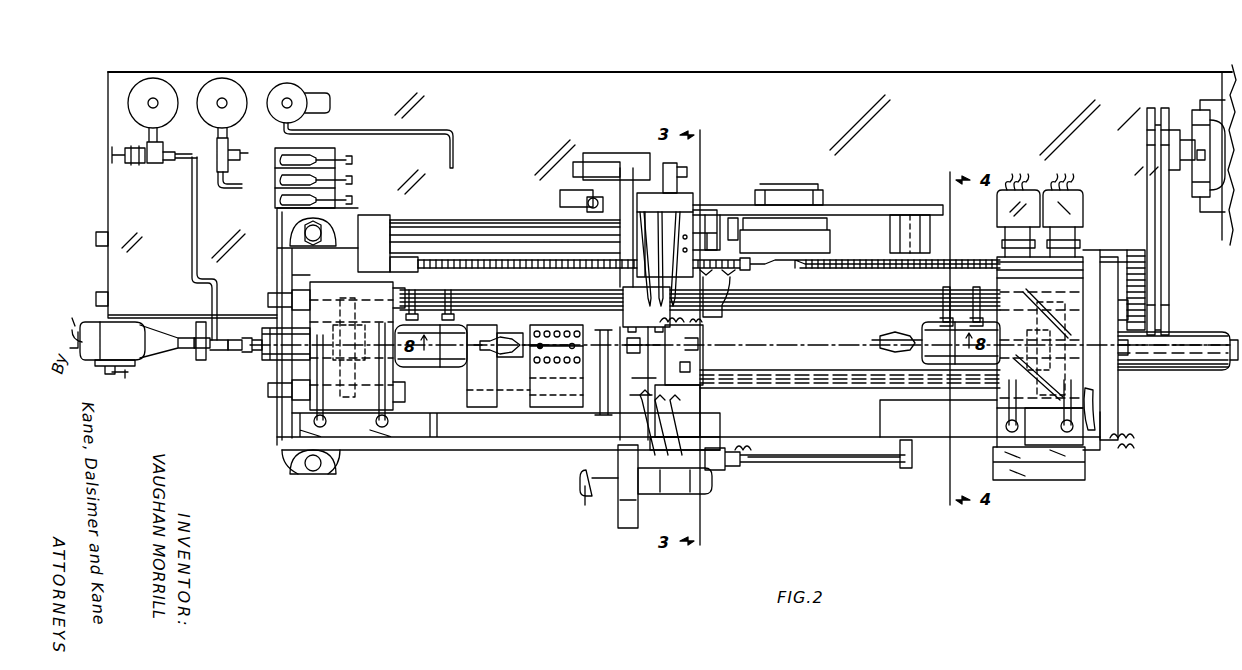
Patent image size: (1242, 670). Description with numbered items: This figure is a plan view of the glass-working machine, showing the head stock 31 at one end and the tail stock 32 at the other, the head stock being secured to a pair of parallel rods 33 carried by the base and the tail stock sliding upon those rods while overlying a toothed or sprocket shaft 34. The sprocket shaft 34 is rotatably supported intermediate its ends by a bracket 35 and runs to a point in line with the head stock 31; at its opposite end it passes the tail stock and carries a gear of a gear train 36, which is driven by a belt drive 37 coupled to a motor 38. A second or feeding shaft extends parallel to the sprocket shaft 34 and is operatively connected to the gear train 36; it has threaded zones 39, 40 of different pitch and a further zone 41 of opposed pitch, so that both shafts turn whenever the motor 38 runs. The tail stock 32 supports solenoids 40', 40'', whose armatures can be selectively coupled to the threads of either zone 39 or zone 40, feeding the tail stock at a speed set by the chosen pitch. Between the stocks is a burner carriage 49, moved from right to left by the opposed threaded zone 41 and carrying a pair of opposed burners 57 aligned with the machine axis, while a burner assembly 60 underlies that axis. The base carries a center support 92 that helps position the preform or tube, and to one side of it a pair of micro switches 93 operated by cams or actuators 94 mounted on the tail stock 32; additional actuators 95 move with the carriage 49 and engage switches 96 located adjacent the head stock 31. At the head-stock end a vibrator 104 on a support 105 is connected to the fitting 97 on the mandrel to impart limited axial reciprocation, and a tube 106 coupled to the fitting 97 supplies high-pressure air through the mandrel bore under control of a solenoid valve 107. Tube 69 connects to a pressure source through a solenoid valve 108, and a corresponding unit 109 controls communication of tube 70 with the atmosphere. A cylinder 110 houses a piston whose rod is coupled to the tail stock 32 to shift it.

The head stock 31 is at (365, 412).
The tail stock 32 is at (1078, 374).
The parallel rods 33 is at (805, 385).
The sprocket shaft 34 is at (848, 312).
The bracket 35 is at (725, 305).
The gear train 36 is at (1140, 300).
The belt drive 37 is at (1158, 200).
The motor 38 is at (1225, 72).
The threaded zone 39 is at (975, 262).
The threaded zone 40 is at (846, 219).
The solenoid 40' is at (1011, 189).
The solenoid 40'' is at (1086, 215).
The threaded zone of opposed pitch 41 is at (500, 260).
The burner carriage 49 is at (703, 372).
The burners 57 is at (690, 218).
The burner assembly 60 is at (572, 380).
The tube 69 is at (455, 157).
The tube 70 is at (405, 290).
The center support 92 is at (630, 340).
The switches 93 is at (725, 484).
The cams or actuators 94 is at (1022, 468).
The cams or actuators 95 is at (560, 195).
The switches 96 is at (352, 196).
The fitting 97 is at (214, 350).
The vibrator 104 is at (132, 356).
The support 105 is at (108, 262).
The tube 106 is at (192, 262).
The solenoid-actuated valve 107 is at (148, 95).
The solenoid-actuated valve 108 is at (287, 88).
The solenoid-actuated unit 109 is at (240, 62).
The cylinder 110 is at (1205, 366).